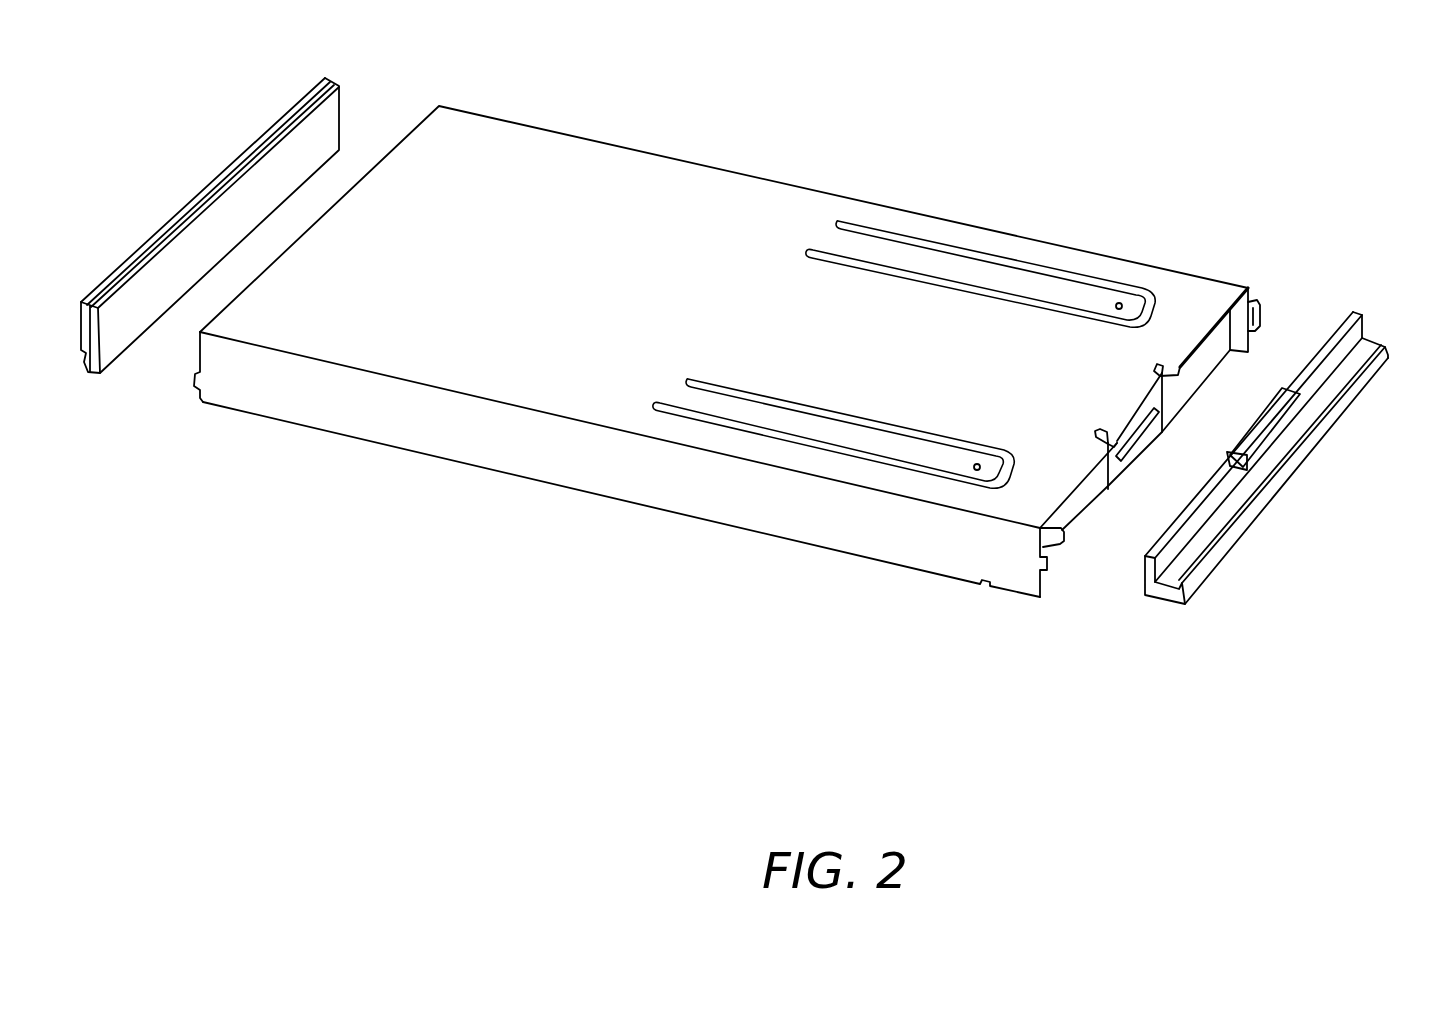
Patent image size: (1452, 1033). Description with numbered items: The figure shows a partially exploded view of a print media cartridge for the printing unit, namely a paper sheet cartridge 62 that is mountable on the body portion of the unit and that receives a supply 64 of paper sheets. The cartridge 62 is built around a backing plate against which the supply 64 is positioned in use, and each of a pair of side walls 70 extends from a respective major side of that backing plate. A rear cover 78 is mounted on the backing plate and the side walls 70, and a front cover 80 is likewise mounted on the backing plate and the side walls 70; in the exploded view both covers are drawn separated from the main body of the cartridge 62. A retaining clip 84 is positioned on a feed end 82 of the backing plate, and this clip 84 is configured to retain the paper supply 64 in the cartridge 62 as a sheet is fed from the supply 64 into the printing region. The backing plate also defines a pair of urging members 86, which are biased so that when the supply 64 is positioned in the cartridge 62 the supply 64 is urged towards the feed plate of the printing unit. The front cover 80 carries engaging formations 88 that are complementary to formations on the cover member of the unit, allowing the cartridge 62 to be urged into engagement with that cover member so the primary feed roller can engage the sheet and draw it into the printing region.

The paper sheet cartridge 62 is at (694, 188).
The supply of paper sheets 64 is at (1078, 512).
The side walls 70 is at (296, 398).
The rear cover 78 is at (252, 187).
The front cover 80 is at (1278, 457).
The feed end 82 is at (1213, 326).
The retaining clip 84 is at (1140, 414).
The urging members 86 is at (1000, 278).
The engaging formations 88 is at (1280, 415).